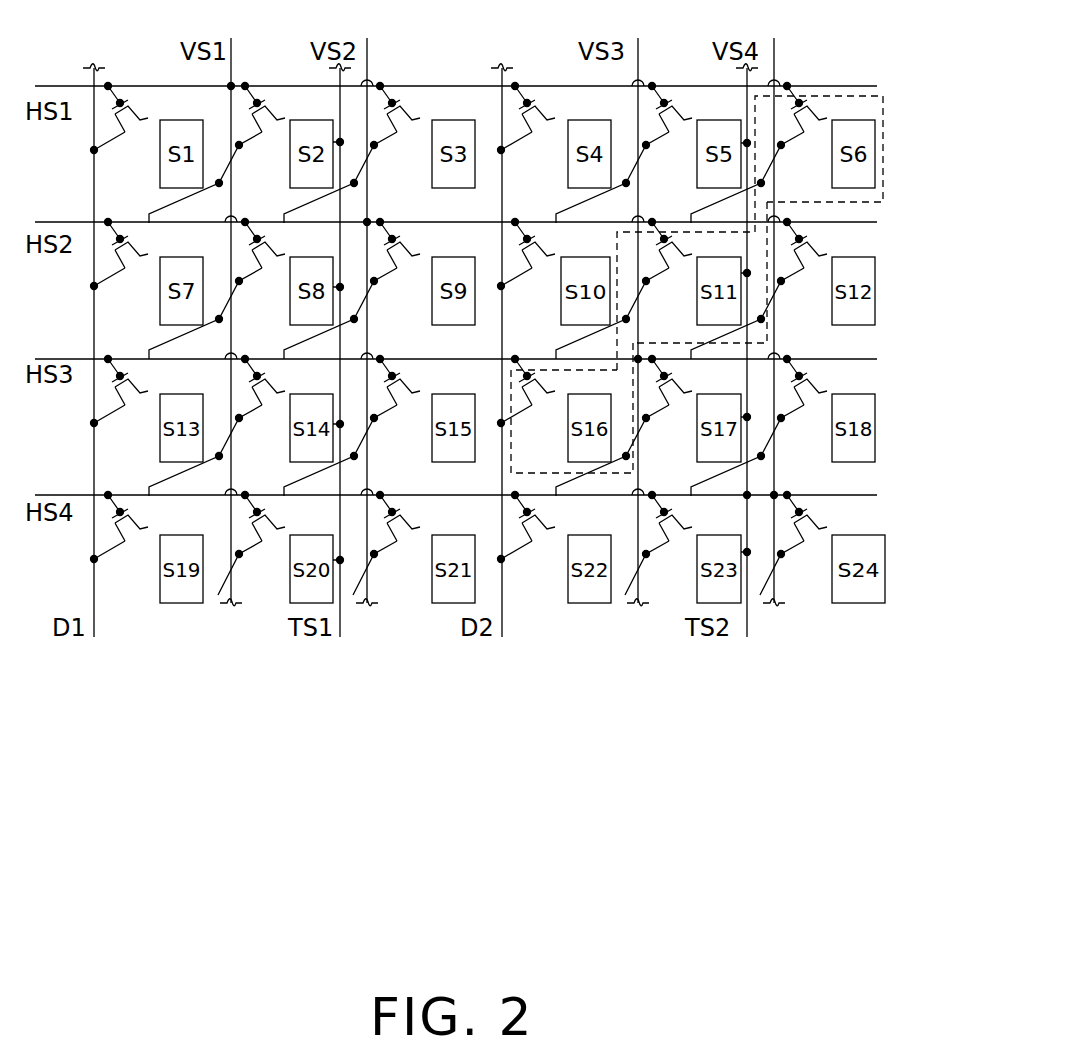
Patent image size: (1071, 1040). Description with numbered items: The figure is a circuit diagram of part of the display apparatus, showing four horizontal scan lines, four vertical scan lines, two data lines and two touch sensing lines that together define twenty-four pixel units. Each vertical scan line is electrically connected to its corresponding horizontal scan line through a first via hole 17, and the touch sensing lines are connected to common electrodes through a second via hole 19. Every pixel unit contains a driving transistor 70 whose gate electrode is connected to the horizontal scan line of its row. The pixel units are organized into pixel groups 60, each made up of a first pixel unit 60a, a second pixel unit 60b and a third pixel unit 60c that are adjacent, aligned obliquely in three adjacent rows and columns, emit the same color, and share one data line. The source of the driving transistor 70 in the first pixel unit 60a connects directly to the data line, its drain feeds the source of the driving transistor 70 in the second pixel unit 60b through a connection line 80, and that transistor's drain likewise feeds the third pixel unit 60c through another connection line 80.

The first via hole 17 is at (234, 86).
The second via hole 19 is at (340, 141).
The driving transistor 70 is at (418, 117).
The connection line 80 is at (157, 345).
The pixel group 60 is at (720, 250).
The first pixel unit 60a is at (611, 437).
The second pixel unit 60b is at (747, 273).
The third pixel unit 60c is at (877, 138).